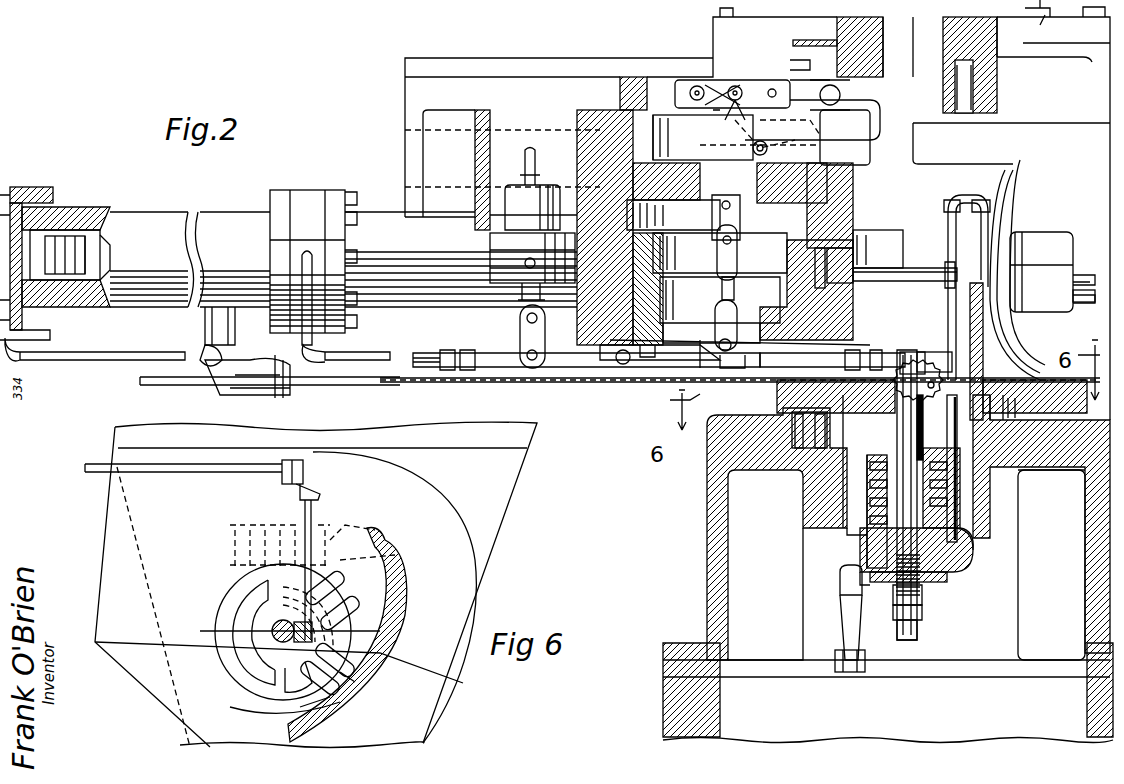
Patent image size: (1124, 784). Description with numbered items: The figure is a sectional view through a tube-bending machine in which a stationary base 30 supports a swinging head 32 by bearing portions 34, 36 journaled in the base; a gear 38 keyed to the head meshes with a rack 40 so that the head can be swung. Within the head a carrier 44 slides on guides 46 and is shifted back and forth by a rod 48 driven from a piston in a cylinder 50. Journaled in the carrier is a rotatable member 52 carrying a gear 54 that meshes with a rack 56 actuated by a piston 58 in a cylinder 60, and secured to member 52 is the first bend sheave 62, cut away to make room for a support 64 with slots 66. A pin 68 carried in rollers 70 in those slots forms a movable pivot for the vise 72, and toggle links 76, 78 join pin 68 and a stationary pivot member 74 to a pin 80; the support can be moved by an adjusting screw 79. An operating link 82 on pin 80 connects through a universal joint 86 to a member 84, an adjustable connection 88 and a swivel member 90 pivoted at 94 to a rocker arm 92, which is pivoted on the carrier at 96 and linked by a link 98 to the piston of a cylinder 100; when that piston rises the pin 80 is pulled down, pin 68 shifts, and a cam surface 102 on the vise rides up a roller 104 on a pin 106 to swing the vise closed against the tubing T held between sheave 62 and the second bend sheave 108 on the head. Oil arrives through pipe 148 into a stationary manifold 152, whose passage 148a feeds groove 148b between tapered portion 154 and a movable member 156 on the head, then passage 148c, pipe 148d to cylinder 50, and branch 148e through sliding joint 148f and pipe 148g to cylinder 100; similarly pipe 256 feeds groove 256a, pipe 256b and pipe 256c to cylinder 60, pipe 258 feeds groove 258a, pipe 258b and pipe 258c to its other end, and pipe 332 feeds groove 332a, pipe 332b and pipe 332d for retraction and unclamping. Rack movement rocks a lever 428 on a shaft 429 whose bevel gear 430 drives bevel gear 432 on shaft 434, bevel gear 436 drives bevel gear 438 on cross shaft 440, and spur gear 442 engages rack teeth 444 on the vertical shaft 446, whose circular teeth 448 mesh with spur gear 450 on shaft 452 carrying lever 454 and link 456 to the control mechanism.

In FIG. 2, the stationary bed or base 30 is at (688, 585).
In FIG. 6, the stationary bed or base 30 is at (492, 548).
In FIG. 2, the swinging head 32 is at (458, 58).
In FIG. 6, the swinging head 32 is at (311, 570).
In FIG. 2, the bearing portion 34 is at (962, 18).
In FIG. 2, the bearing portion 36 is at (875, 505).
In FIG. 2, the gear 38 is at (1035, 500).
In FIG. 2, the rack 40 is at (870, 465).
In FIG. 2, the supporting member or carrier 44 is at (605, 125).
In FIG. 2, the guides 46 is at (410, 147).
In FIG. 2, the rod 48 is at (928, 270).
In FIG. 2, the cylinder 50 is at (1050, 252).
In FIG. 2, the rotatable member 52 is at (615, 112).
In FIG. 2, the gear 54 is at (855, 300).
In FIG. 2, the rack 56 is at (870, 258).
In FIG. 2, the piston 58 is at (72, 240).
In FIG. 2, the cylinder 60 is at (152, 215).
In FIG. 2, the first bend sheave 62 is at (630, 77).
In FIG. 2, the support 64 is at (657, 80).
In FIG. 2, the slots 66 is at (692, 85).
In FIG. 2, the pin 68 is at (699, 86).
In FIG. 2, the rollers 70 is at (716, 90).
In FIG. 2, the clamping member or vise 72 is at (850, 135).
In FIG. 2, the stationary pivot member 74 is at (773, 93).
In FIG. 2, the toggle link 76 is at (740, 85).
In FIG. 2, the toggle link 78 is at (769, 89).
In FIG. 2, the adjusting screw 79 is at (697, 165).
In FIG. 2, the pin 80 is at (738, 102).
In FIG. 2, the operating link 82 is at (725, 207).
In FIG. 2, the member 84 is at (723, 250).
In FIG. 2, the universal joint 86 is at (742, 226).
In FIG. 2, the adjustable connection 88 is at (722, 291).
In FIG. 2, the swivel member 90 is at (720, 318).
In FIG. 2, the rocker arm 92 is at (665, 360).
In FIG. 2, the pivot 94 is at (730, 345).
In FIG. 2, the pivot 96 is at (620, 365).
In FIG. 2, the link 98 is at (520, 336).
In FIG. 2, the cylinder 100 is at (545, 190).
In FIG. 2, the cam surface 102 is at (740, 143).
In FIG. 2, the roller 104 is at (790, 126).
In FIG. 2, the pin 106 is at (768, 149).
In FIG. 2, the second bend sheave 108 is at (1000, 95).
In FIG. 6, the pipe 148 is at (352, 530).
In FIG. 2, the passage 148a is at (950, 540).
In FIG. 2, the groove 148b is at (880, 530).
In FIG. 2, the passage 148c is at (958, 500).
In FIG. 2, the pipe 148d is at (966, 200).
In FIG. 6, the pipe 148d is at (328, 699).
In FIG. 2, the branch 148e is at (892, 352).
In FIG. 2, the sliding type pipe joint 148f is at (497, 370).
In FIG. 2, the pipe 148g is at (525, 262).
In FIG. 2, the stationary manifold 152 is at (840, 570).
In FIG. 6, the stationary manifold 152 is at (398, 537).
In FIG. 2, the tapered portion 154 is at (890, 455).
In FIG. 2, the movable member 156 is at (875, 490).
In FIG. 6, the movable member 156 is at (228, 592).
In FIG. 2, the tubing T is at (840, 95).
In FIG. 6, the pipe 256 is at (268, 532).
In FIG. 2, the groove 256a is at (875, 520).
In FIG. 6, the pipe 256b is at (352, 608).
In FIG. 2, the pipe 256c is at (70, 365).
In FIG. 6, the pipe 258 is at (235, 536).
In FIG. 2, the groove 258a is at (875, 476).
In FIG. 6, the pipe 258b is at (345, 570).
In FIG. 2, the pipe 258c is at (315, 353).
In FIG. 2, the pipe 332 is at (945, 565).
In FIG. 6, the pipe 332 is at (349, 524).
In FIG. 2, the groove 332a is at (870, 537).
In FIG. 2, the pipe 332b is at (1083, 303).
In FIG. 6, the pipe 332b is at (350, 674).
In FIG. 2, the pipe 332d is at (530, 150).
In FIG. 2, the lever 428 is at (210, 300).
In FIG. 2, the shaft 429 is at (203, 345).
In FIG. 2, the bevel gear 430 is at (210, 375).
In FIG. 2, the bevel gear 432 is at (240, 390).
In FIG. 2, the shaft 434 is at (145, 383).
In FIG. 6, the shaft 434 is at (180, 474).
In FIG. 2, the bevel gear 436 is at (880, 355).
In FIG. 6, the bevel gear 436 is at (294, 462).
In FIG. 6, the bevel gear 438 is at (318, 482).
In FIG. 2, the cross shaft 440 is at (960, 395).
In FIG. 6, the cross shaft 440 is at (314, 497).
In FIG. 2, the spur gear 442 is at (930, 365).
In FIG. 6, the spur gear 442 is at (312, 632).
In FIG. 2, the rack teeth 444 is at (908, 352).
In FIG. 2, the vertically extending shaft 446 is at (900, 405).
In FIG. 6, the vertically extending shaft 446 is at (272, 630).
In FIG. 2, the circular teeth 448 is at (918, 625).
In FIG. 2, the spur gear 450 is at (922, 588).
In FIG. 2, the shaft 452 is at (922, 605).
In FIG. 2, the lever 454 is at (845, 612).
In FIG. 2, the link 456 is at (840, 650).